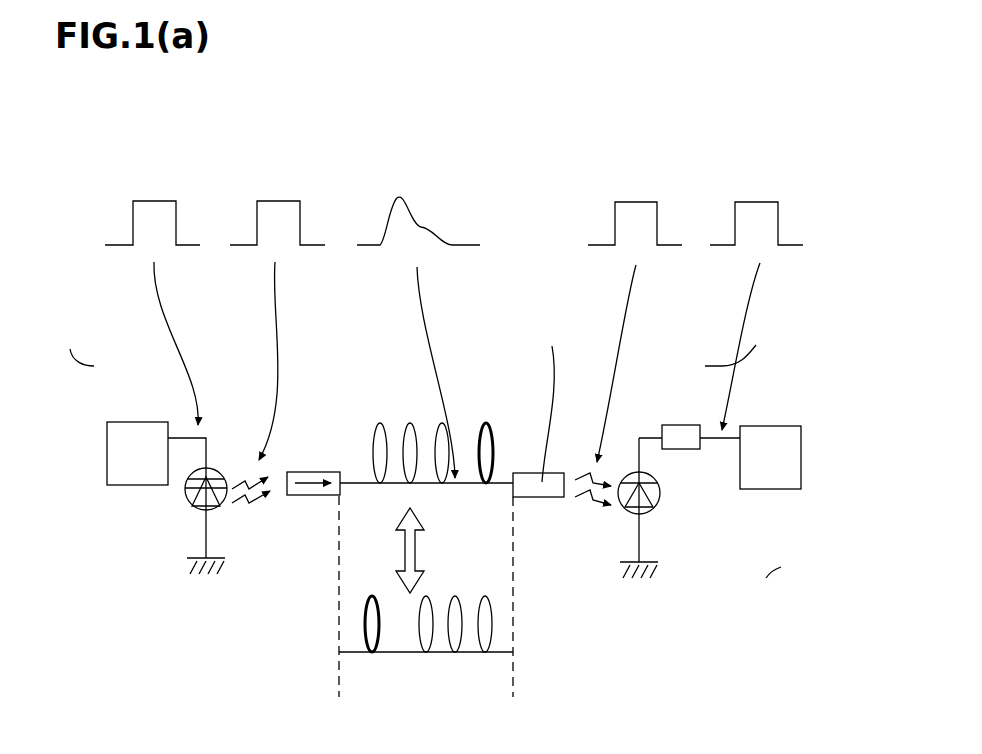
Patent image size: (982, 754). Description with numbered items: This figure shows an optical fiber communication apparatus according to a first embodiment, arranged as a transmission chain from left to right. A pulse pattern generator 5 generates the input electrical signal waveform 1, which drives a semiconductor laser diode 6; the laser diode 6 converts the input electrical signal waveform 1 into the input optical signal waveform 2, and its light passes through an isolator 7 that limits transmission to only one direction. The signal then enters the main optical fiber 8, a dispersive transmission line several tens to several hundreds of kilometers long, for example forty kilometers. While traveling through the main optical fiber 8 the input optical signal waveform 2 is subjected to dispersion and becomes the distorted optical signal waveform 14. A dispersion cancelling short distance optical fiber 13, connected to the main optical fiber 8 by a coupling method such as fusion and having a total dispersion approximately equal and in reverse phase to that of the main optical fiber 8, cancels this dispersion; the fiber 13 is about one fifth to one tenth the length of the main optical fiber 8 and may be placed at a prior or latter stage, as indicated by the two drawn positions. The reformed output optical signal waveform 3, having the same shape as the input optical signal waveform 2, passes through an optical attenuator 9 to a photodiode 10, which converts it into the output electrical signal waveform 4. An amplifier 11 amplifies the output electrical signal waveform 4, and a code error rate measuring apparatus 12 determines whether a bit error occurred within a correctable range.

The input electrical signal waveform 1 is at (160, 190).
The input optical signal waveform 2 is at (279, 190).
The output optical signal waveform 3 is at (634, 190).
The output electrical signal waveform 4 is at (757, 190).
The pulse pattern generator 5 is at (140, 422).
The semiconductor laser diode 6 is at (187, 505).
The isolator 7 is at (317, 496).
The main optical fiber 8 is at (406, 425).
The optical attenuator 9 is at (535, 497).
The photodiode 10 is at (661, 497).
The amplifier 11 is at (688, 425).
The code error rate measuring apparatus 12 is at (763, 489).
The dispersion cancelling short distance optical fiber 13 is at (494, 441).
The optical signal waveform 14 is at (418, 208).